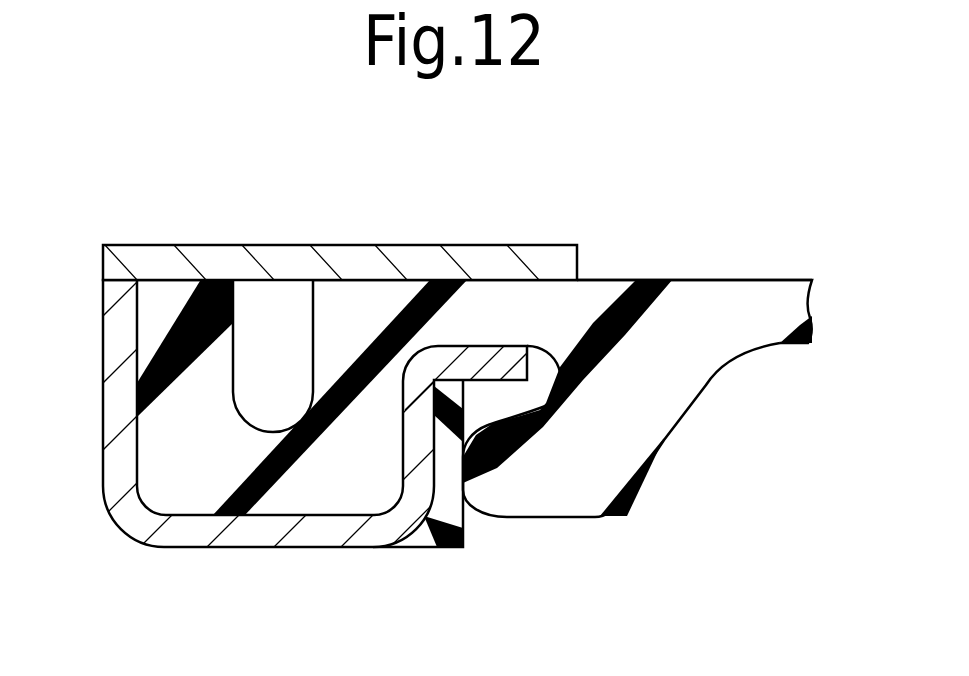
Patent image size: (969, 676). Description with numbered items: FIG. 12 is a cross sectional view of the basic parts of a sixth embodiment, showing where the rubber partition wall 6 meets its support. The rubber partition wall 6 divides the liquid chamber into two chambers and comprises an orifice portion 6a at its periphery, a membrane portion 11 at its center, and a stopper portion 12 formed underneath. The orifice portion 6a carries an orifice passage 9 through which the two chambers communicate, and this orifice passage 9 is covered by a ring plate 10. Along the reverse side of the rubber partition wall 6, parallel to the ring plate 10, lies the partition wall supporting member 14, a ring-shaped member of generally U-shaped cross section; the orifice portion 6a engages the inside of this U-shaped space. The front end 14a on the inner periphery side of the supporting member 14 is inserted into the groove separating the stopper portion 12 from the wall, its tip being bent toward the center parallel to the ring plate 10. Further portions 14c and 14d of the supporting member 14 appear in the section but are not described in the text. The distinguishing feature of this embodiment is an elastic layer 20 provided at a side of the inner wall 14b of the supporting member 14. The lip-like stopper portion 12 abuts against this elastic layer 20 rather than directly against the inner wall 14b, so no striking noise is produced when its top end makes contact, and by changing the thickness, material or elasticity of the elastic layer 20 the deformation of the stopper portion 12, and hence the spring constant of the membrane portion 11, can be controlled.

The rubber partition wall 6 is at (830, 302).
The orifice portion 6a is at (150, 442).
The orifice passage 9 is at (253, 327).
The ring plate 10 is at (210, 258).
The membrane portion 11 is at (742, 290).
The stopper portion 12 is at (577, 497).
The partition wall supporting member 14 is at (348, 428).
The front end 14a is at (520, 372).
The inner wall 14b is at (403, 458).
The side wall portion 14c is at (103, 490).
The bottom portion 14d is at (308, 538).
The elastic layer 20 is at (466, 527).